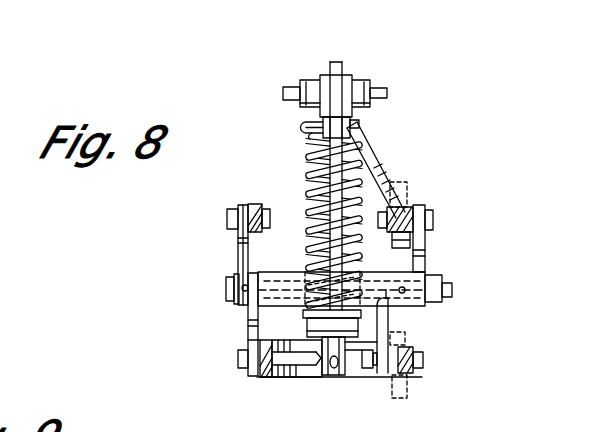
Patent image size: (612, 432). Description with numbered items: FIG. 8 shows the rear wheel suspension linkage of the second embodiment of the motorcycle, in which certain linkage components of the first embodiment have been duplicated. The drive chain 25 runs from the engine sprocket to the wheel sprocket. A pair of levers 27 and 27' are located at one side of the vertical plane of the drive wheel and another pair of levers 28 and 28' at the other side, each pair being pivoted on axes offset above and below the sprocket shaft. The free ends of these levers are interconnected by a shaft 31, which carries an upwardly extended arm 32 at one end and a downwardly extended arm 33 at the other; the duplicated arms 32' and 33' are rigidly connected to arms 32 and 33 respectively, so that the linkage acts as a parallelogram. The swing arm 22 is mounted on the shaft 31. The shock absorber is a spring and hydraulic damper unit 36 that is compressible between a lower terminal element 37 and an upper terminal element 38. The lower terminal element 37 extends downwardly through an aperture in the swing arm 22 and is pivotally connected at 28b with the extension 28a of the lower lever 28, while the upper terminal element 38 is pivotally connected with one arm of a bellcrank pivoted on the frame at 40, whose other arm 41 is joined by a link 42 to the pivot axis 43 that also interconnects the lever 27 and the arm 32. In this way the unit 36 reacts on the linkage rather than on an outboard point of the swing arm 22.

The swing arm 22 is at (271, 273).
The drive chain 25 is at (410, 184).
The lever 27 is at (430, 213).
The lever 27' is at (435, 352).
The lever 28 is at (252, 383).
The extension 28a is at (295, 380).
The pivotal connection 28b is at (343, 380).
The lever 28' is at (227, 203).
The shaft 31 is at (226, 287).
The upwardly extended arm 32 is at (450, 238).
The arm 32' is at (432, 331).
The downwardly extended arm 33 is at (225, 324).
The arm 33' is at (210, 255).
The spring and hydraulic damper unit 36 is at (305, 168).
The lower terminal element 37 is at (305, 322).
The upper terminal element 38 is at (303, 122).
The bellcrank pivot 40 is at (291, 87).
The bellcrank arm 41 is at (340, 66).
The link 42 is at (381, 170).
The pivot axis 43 is at (433, 221).